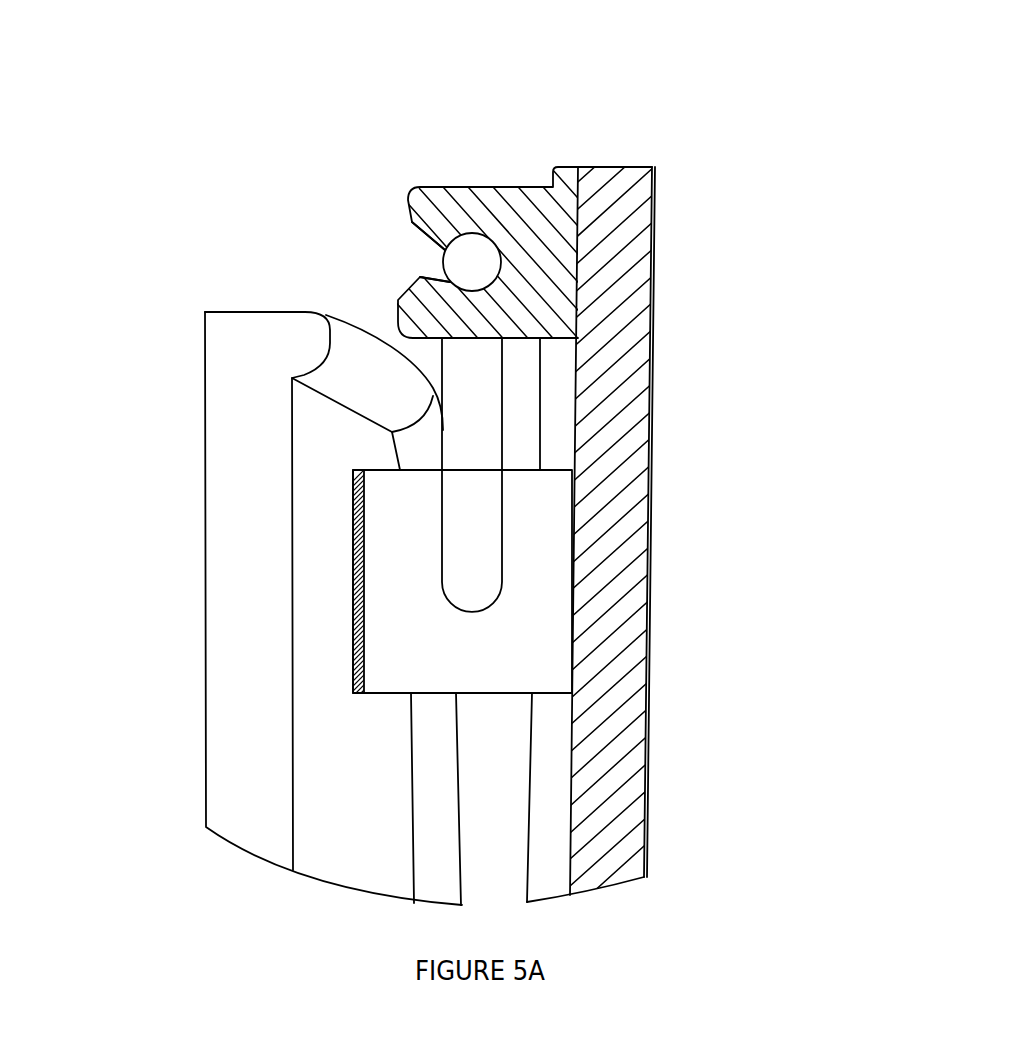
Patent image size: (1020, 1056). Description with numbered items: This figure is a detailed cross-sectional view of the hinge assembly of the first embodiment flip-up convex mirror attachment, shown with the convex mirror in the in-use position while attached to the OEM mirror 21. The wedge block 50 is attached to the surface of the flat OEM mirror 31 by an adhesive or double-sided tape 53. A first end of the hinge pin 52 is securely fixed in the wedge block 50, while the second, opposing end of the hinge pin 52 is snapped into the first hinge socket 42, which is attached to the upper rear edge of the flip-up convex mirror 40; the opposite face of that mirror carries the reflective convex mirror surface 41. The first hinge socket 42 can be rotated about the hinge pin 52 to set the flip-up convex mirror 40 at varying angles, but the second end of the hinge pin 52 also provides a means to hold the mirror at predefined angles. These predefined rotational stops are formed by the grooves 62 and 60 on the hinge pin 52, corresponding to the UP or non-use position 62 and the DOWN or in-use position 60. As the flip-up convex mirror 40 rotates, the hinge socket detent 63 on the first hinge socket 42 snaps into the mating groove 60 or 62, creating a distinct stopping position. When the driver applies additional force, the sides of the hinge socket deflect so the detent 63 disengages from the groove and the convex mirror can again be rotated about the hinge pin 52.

The OEM mirror 21 is at (233, 394).
The flat OEM mirror 31 is at (345, 803).
The flip-up convex mirror 40 is at (692, 499).
The reflective convex mirror surface 41 is at (648, 683).
The first hinge socket 42 is at (435, 245).
The wedge block 50 is at (328, 557).
The hinge pin 52 is at (456, 263).
The adhesive or double-sided tape 53 is at (357, 580).
The DOWN or in-use position groove 60 is at (479, 293).
The UP or non-use position groove 62 is at (495, 249).
The hinge socket detent 63 is at (507, 313).